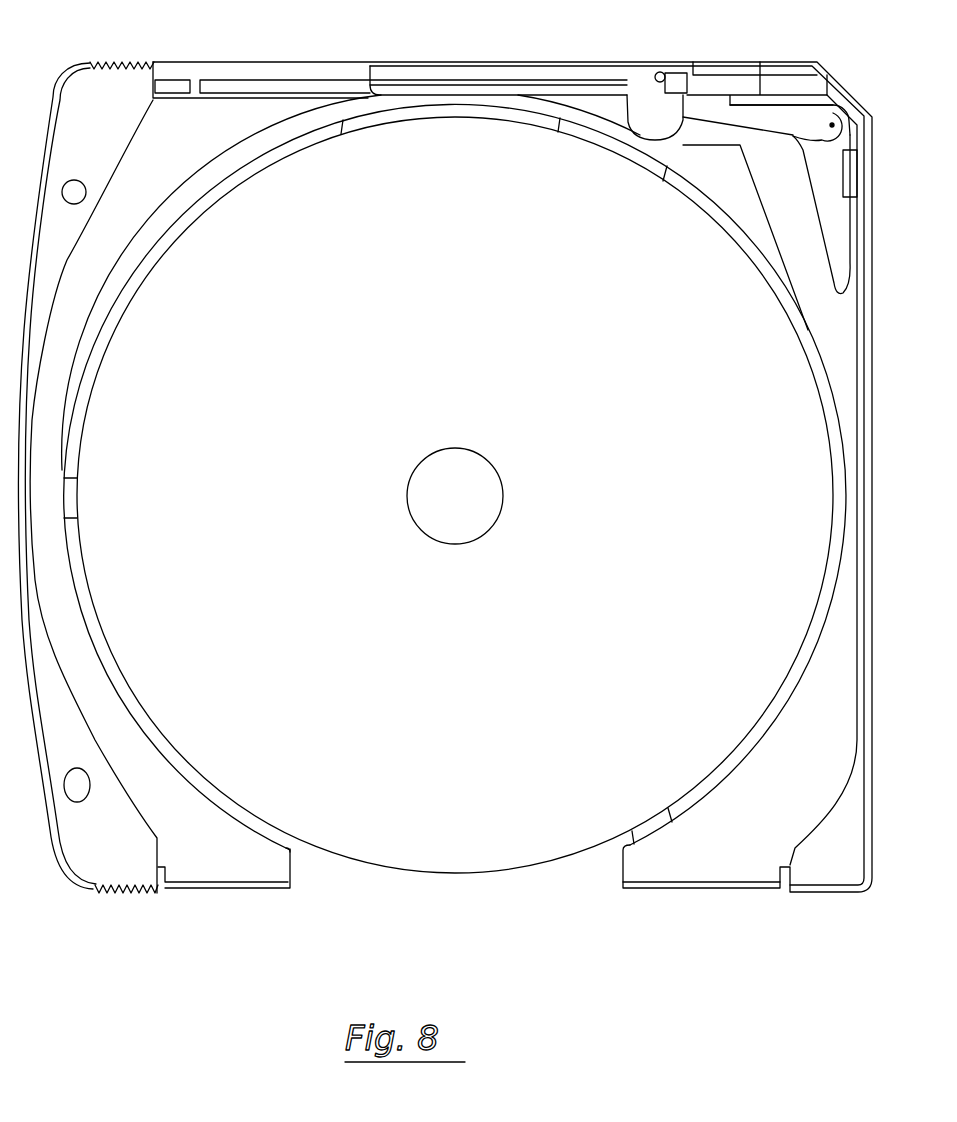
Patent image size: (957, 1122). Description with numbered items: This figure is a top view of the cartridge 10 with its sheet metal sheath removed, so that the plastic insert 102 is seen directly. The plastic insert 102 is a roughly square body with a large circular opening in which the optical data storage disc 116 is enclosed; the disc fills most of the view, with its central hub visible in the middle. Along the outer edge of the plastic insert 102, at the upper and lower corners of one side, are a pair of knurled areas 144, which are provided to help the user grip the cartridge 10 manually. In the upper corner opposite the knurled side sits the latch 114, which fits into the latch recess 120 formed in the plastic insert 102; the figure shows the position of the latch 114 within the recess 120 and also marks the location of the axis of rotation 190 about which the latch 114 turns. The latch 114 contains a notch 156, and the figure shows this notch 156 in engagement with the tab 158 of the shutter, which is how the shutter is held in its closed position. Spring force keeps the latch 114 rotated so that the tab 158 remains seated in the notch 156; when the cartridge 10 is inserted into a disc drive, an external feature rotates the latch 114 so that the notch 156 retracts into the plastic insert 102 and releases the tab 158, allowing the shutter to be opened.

The cartridge 10 is at (322, 945).
The plastic insert 102 is at (708, 863).
The latch 114 is at (687, 107).
The optical data storage disc 116 is at (343, 672).
The latch recess 120 is at (786, 195).
The knurled area 144 is at (142, 41).
The notch 156 is at (655, 111).
The tab 158 is at (675, 92).
The axis of rotation 190 is at (816, 138).